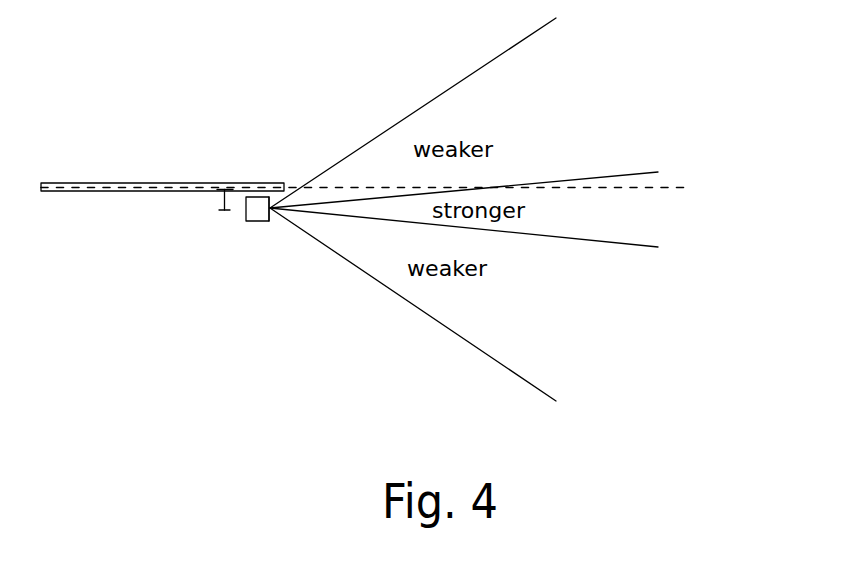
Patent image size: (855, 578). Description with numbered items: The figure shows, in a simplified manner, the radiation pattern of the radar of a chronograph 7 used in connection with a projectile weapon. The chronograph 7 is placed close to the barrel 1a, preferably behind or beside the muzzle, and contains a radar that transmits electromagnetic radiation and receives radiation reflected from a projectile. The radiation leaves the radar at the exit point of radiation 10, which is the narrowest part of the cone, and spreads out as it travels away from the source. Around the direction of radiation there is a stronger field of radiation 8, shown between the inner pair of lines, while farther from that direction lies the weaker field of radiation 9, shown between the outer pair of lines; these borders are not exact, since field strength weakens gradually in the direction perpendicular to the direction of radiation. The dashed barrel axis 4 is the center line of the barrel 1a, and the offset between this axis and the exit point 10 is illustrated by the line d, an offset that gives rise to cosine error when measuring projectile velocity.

The barrel of the projectile weapon 1a is at (174, 183).
The barrel axis of the projectile weapon 4 is at (678, 188).
The offset line d is at (224, 203).
The chronograph 7 is at (258, 222).
The stronger field of radiation 8 is at (628, 173).
The weaker field of radiation 9 is at (445, 93).
The exit point of radiation 10 is at (271, 221).